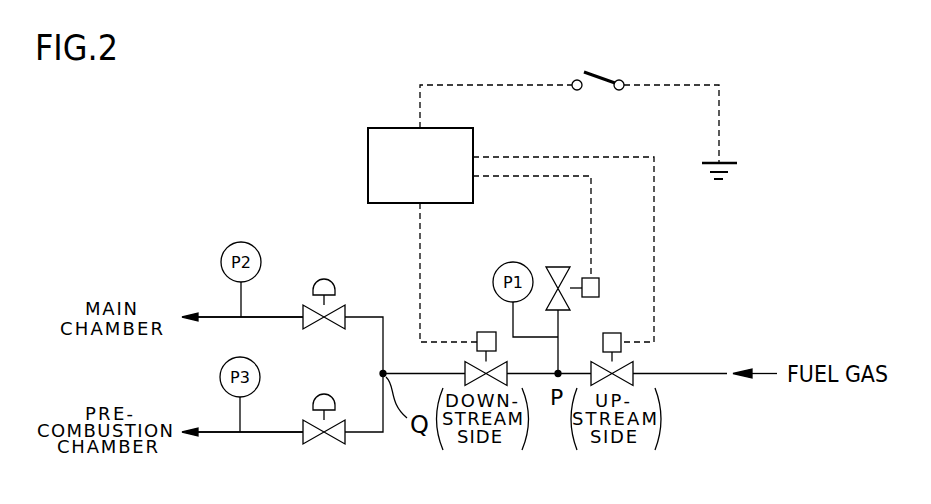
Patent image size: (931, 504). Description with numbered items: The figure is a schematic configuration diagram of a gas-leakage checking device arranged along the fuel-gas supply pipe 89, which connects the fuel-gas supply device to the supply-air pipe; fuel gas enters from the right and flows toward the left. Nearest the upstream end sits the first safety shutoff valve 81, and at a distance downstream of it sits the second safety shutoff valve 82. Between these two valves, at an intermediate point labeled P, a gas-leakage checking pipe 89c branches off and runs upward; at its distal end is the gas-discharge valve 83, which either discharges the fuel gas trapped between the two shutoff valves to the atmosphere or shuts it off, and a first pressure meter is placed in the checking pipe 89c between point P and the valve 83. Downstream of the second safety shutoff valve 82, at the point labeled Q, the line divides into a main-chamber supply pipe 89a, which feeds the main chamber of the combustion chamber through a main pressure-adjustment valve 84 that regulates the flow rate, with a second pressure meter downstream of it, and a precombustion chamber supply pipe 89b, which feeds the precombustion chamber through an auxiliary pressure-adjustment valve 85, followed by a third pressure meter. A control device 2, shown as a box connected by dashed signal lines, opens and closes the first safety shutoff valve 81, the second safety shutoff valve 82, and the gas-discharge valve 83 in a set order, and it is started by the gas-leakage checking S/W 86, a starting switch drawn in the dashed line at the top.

The control device 2 is at (368, 163).
The first safety shutoff valve 81 is at (636, 380).
The second safety shutoff valve 82 is at (508, 381).
The gas-discharge valve 83 is at (557, 265).
The main pressure-adjustment valve 84 is at (347, 315).
The auxiliary pressure-adjustment valve 85 is at (347, 437).
The gas-leakage checking S/W 86 is at (620, 78).
The fuel-gas supply pipe 89 is at (683, 373).
The main-chamber supply pipe 89a is at (270, 316).
The precombustion chamber supply pipe 89b is at (270, 430).
The gas-leakage checking pipe 89c is at (560, 345).